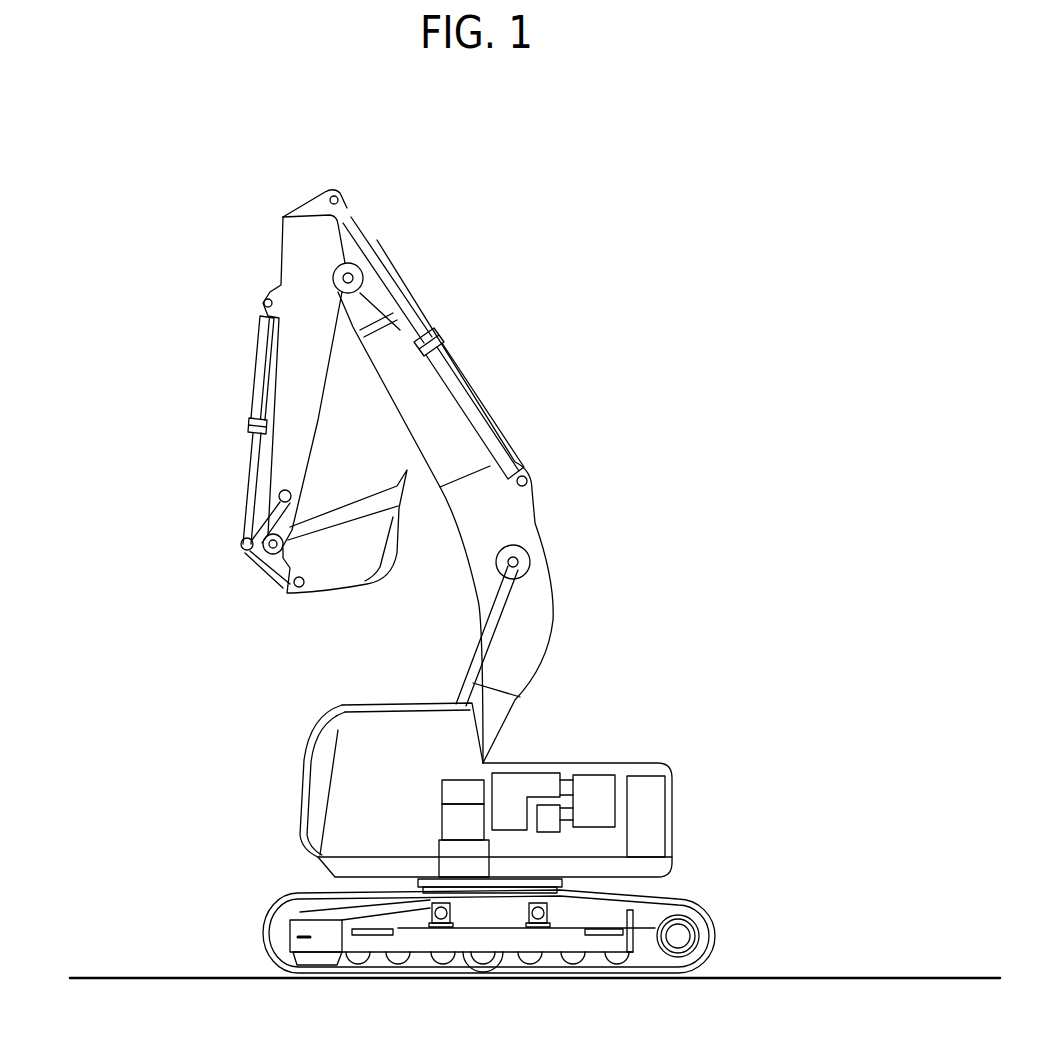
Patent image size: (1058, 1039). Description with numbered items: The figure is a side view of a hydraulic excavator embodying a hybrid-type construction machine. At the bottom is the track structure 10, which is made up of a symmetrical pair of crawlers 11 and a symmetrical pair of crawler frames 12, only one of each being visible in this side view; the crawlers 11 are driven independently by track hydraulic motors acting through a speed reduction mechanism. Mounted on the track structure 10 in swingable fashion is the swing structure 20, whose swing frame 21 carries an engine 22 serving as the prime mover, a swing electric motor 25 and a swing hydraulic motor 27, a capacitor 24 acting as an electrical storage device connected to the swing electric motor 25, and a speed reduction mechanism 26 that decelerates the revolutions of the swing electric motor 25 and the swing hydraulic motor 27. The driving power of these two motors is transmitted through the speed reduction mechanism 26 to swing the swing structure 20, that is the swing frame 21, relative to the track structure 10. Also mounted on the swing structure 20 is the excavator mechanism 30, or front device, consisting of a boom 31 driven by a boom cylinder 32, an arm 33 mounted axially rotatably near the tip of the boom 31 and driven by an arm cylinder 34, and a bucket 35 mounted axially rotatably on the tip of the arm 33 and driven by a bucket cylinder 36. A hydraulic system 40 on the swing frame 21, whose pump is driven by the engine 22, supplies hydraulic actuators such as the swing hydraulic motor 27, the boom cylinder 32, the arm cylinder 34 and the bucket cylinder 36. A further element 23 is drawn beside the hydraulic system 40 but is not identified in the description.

The track structure 10 is at (274, 892).
The crawler 11 is at (715, 920).
The crawler frame 12 is at (463, 935).
The swing structure 20 is at (300, 722).
The swing frame 21 is at (672, 868).
The engine 22 is at (595, 783).
The controller 23 is at (550, 822).
The capacitor 24 is at (653, 808).
The swing electric motor 25 is at (447, 817).
The speed reduction mechanism 26 is at (447, 853).
The swing hydraulic motor 27 is at (447, 787).
The excavator mechanism 30 is at (486, 298).
The boom 31 is at (545, 588).
The boom cylinder 32 is at (477, 655).
The arm 33 is at (296, 244).
The arm cylinder 34 is at (477, 415).
The bucket 35 is at (352, 573).
The bucket cylinder 36 is at (262, 375).
The hydraulic system 40 is at (525, 783).